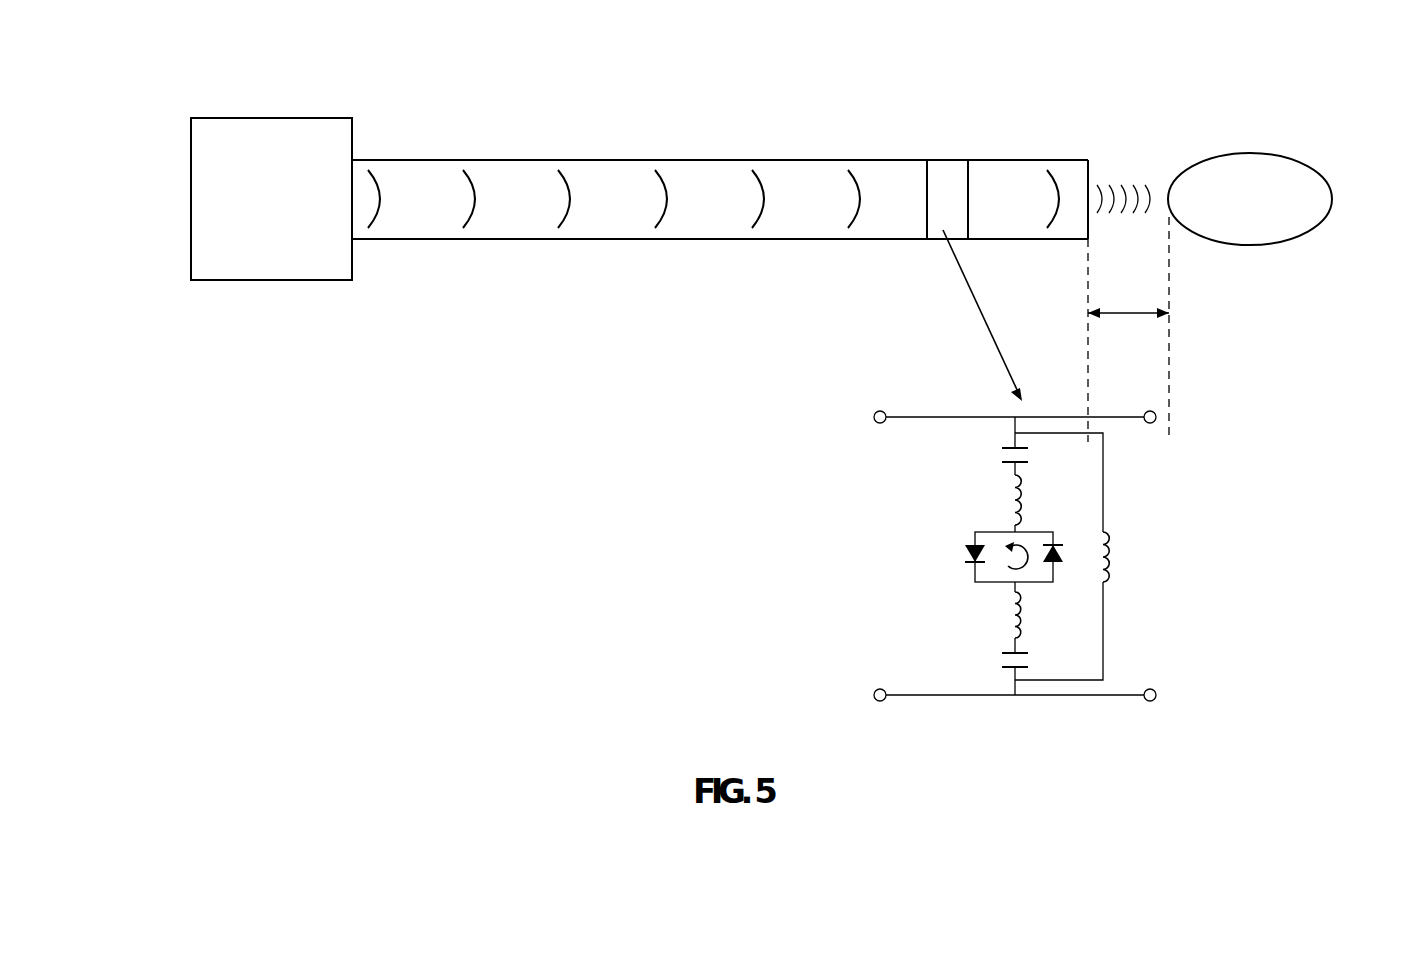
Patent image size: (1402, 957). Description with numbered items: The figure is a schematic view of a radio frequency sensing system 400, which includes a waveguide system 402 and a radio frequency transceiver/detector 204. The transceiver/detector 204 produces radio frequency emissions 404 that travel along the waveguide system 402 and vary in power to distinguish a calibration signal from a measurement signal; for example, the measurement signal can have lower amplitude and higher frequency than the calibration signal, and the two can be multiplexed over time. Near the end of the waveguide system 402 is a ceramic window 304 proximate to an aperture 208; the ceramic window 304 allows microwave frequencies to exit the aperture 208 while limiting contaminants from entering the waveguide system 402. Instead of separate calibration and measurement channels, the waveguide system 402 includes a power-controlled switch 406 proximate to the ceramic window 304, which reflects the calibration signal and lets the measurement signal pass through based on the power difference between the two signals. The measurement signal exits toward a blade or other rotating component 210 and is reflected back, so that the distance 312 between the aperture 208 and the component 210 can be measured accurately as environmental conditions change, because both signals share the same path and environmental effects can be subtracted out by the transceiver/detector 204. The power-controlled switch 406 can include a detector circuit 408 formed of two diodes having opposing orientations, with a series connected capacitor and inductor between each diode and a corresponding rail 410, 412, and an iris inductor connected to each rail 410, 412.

The radio frequency sensing system 400 is at (185, 54).
The radio frequency transceiver/detector 204 is at (191, 200).
The waveguide system 402 is at (487, 158).
The radio frequency emissions 404 is at (764, 187).
The ceramic window 304 is at (1015, 152).
The aperture 208 is at (1089, 173).
The rotating component 210 is at (1300, 160).
The distance 312 is at (1122, 316).
The power-controlled switch 406 is at (928, 244).
The rail 410 is at (915, 420).
The rail 412 is at (922, 693).
The detector circuit 408 is at (838, 555).